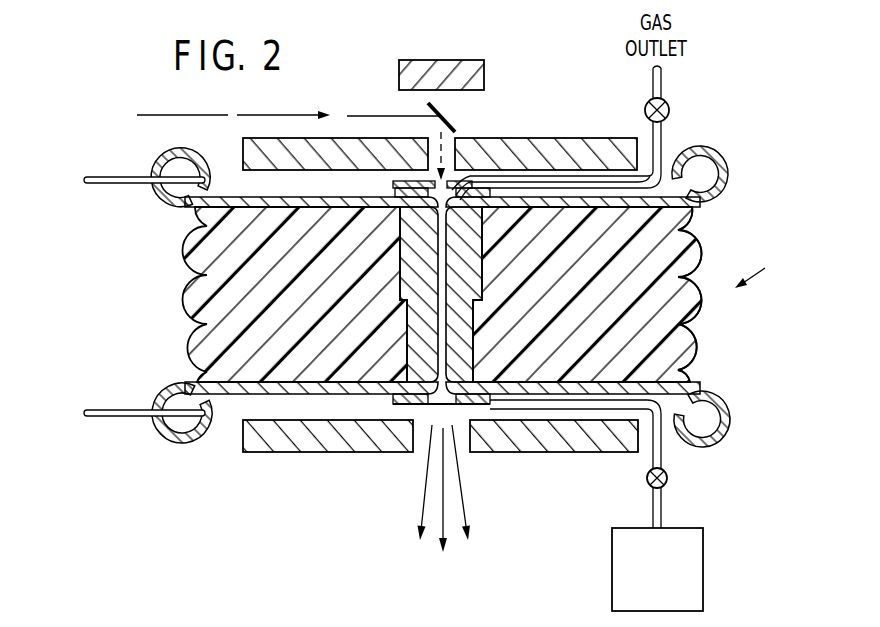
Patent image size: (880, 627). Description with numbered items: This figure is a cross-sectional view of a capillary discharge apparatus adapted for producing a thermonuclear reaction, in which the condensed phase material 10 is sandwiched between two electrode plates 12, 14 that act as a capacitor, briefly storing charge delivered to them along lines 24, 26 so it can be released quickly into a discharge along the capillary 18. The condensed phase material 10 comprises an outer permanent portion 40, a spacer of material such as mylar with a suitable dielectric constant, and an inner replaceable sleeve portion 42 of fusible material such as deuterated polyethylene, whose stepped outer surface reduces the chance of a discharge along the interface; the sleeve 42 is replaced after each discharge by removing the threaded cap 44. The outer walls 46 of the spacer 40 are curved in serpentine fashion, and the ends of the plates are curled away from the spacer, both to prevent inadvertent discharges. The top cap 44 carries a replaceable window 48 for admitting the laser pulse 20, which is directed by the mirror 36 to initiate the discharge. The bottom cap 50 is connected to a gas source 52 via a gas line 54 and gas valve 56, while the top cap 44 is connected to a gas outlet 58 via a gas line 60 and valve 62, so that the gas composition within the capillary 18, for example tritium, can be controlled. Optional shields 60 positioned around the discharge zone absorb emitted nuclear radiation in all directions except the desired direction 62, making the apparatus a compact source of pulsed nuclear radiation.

The condensed phase material 10 is at (760, 271).
The electrode plate 12 is at (253, 197).
The electrode plate 14 is at (284, 393).
The capillary 18 is at (443, 341).
The laser pulse 20 is at (376, 116).
The line 24 is at (122, 176).
The line 26 is at (112, 416).
The mirror 36 is at (453, 124).
The outer permanent portion 40 is at (684, 353).
The inner replaceable sleeve portion 42 is at (472, 287).
The threaded cap 44 is at (393, 185).
The outer walls 46 is at (698, 258).
The replaceable window 48 is at (452, 186).
The bottom cap 50 is at (397, 405).
The gas source 52 is at (700, 568).
The gas line 54 is at (659, 449).
The gas valve 56 is at (668, 485).
The gas outlet 58 is at (663, 80).
The shields 60 is at (456, 60).
The desired direction 62 is at (645, 102).